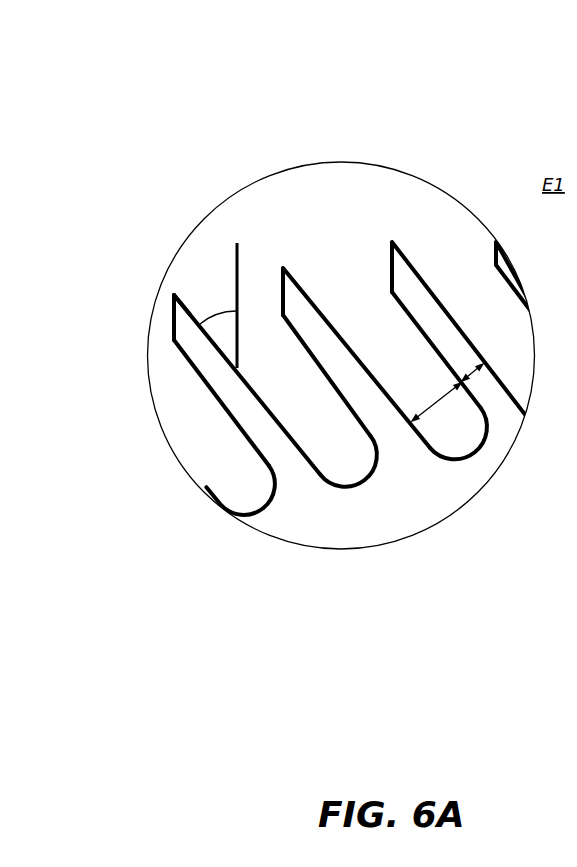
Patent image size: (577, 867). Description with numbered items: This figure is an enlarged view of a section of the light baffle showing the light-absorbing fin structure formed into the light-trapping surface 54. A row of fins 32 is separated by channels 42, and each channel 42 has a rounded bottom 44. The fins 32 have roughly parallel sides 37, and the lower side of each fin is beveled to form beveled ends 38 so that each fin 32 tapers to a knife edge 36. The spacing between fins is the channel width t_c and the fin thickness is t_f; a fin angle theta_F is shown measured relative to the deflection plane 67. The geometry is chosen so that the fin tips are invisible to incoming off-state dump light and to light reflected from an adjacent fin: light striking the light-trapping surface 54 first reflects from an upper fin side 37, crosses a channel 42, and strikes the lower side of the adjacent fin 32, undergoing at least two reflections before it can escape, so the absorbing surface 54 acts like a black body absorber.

The fins 32 is at (320, 332).
The knife edge 36 is at (168, 292).
The parallel sides 37 is at (343, 398).
The beveled ends 38 is at (173, 320).
The channels 42 is at (328, 470).
The rounded bottoms 44 is at (488, 428).
The light-trapping surface 54 is at (186, 423).
The deflection plane 67 is at (236, 296).